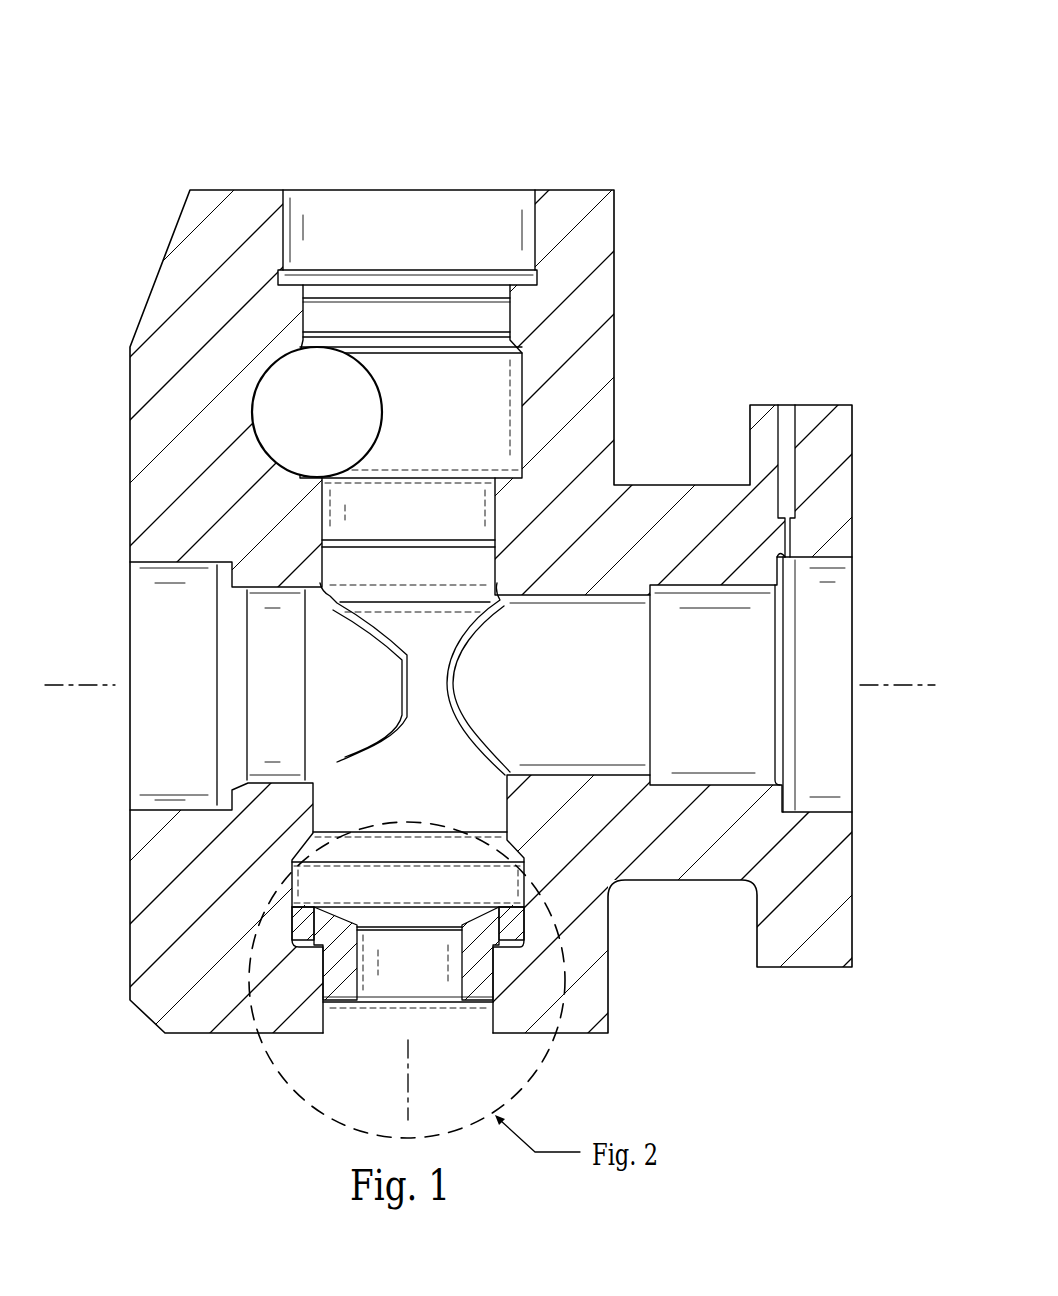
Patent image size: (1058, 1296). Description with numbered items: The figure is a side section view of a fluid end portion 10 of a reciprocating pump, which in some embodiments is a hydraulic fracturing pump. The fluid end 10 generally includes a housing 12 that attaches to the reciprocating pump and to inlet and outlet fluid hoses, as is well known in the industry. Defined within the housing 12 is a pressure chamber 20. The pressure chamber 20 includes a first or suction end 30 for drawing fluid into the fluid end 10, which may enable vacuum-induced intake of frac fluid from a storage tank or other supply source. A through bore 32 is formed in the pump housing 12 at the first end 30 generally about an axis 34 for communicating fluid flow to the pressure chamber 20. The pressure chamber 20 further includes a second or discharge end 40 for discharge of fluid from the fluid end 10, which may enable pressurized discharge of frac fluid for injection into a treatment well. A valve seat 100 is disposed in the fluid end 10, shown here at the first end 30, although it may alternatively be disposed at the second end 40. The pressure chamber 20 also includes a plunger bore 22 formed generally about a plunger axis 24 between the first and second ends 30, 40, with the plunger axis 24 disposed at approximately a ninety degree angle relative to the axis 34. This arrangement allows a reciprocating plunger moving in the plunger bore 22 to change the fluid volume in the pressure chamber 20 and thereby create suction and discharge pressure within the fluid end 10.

The fluid end portion 10 is at (529, 566).
The housing 12 is at (620, 280).
The pressure chamber 20 is at (369, 753).
The plunger bore 22 is at (750, 637).
The plunger axis 24 is at (932, 688).
The first end 30 is at (433, 880).
The through bore 32 is at (487, 1030).
The axis 34 is at (407, 1052).
The second end 40 is at (446, 429).
The valve seat 100 is at (430, 1020).